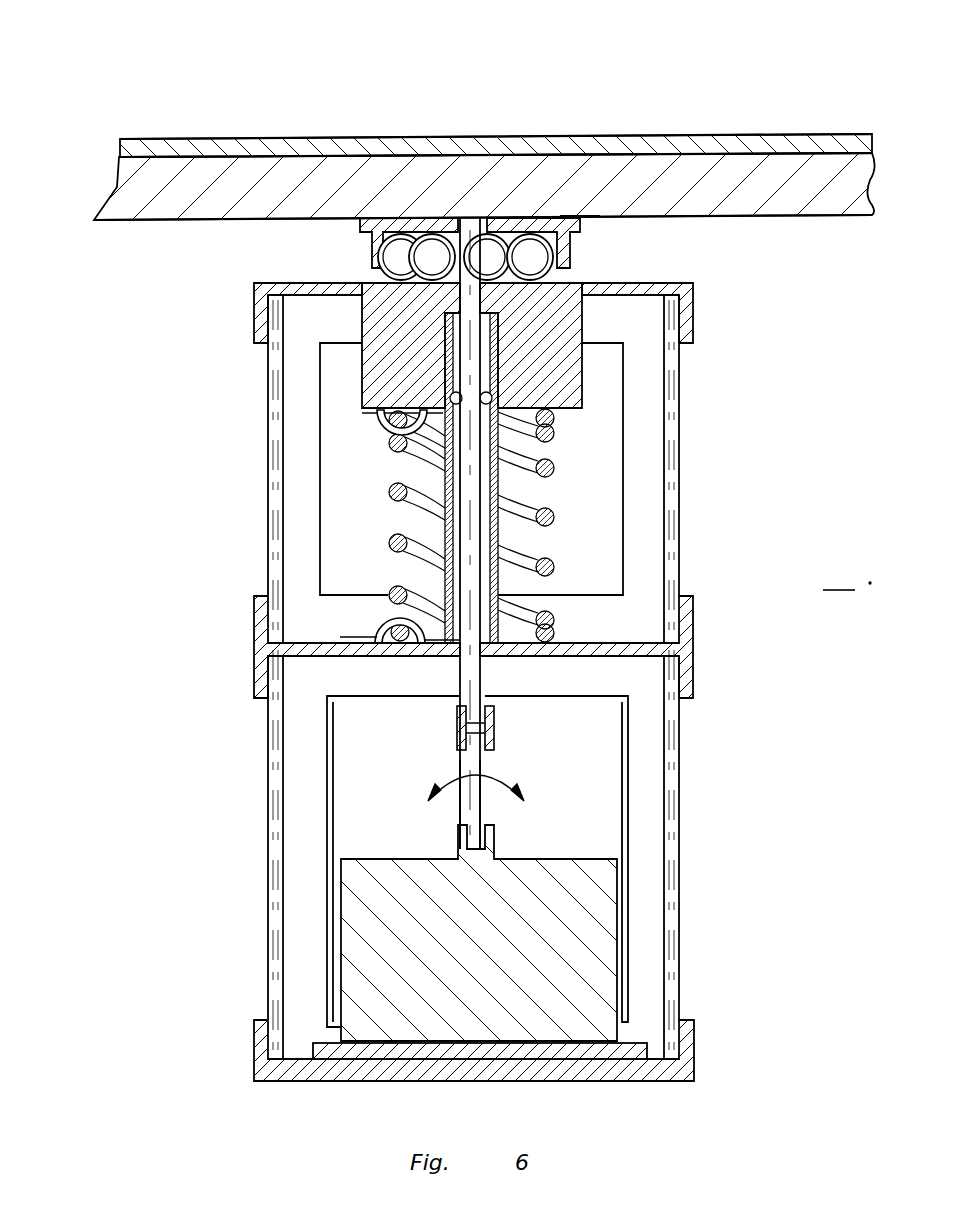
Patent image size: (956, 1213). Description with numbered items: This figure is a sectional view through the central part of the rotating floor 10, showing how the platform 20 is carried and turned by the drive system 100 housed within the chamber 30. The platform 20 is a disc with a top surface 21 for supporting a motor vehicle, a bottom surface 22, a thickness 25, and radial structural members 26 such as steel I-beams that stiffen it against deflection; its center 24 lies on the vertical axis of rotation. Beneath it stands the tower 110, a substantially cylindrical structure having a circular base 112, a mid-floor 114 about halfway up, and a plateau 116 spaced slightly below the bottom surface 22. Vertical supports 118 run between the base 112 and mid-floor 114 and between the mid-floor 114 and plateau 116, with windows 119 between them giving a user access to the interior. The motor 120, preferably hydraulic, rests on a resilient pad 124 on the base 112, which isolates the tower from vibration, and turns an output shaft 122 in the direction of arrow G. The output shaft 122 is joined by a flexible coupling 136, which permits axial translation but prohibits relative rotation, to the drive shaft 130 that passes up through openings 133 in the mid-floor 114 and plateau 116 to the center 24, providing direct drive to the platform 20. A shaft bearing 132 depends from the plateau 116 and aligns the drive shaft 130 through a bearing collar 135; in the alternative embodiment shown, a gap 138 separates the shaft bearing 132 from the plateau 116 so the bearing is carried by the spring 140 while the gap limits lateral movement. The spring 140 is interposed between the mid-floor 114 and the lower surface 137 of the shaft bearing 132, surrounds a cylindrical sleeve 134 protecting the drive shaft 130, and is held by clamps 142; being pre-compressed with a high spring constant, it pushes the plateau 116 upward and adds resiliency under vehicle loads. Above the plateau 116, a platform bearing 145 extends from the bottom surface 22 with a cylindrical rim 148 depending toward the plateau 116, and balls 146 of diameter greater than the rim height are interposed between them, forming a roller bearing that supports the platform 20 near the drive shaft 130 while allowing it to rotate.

The rotating floor 10 is at (142, 84).
The platform 20 is at (122, 157).
The top surface 21 is at (257, 137).
The bottom surface 22 is at (165, 222).
The center 24 is at (506, 136).
The thickness 25 is at (301, 152).
The radial structural members 26 is at (387, 177).
The platform bearing 145 is at (583, 198).
The balls 146 is at (562, 250).
The cylindrical rim 148 is at (374, 250).
The drive system 100 is at (170, 630).
The chamber 30 is at (847, 576).
The plateau 116 is at (678, 283).
The gap 138 is at (587, 299).
The vertical supports 118 is at (670, 463).
The windows 119 is at (610, 530).
The shaft bearing 132 is at (585, 373).
The openings 133 is at (512, 297).
The bearing collar 135 is at (450, 398).
The drive shaft 130 is at (489, 677).
The output shaft 122 is at (489, 807).
The spring 140 is at (390, 490).
The cylindrical sleeve 134 is at (443, 526).
The lower surface 137 is at (567, 410).
The clamps 142 is at (378, 431).
The tower 110 is at (253, 674).
The mid-floor 114 is at (270, 598).
The flexible coupling 136 is at (457, 728).
The motor 120 is at (617, 940).
The pad 124 is at (648, 1045).
The base 112 is at (262, 1058).